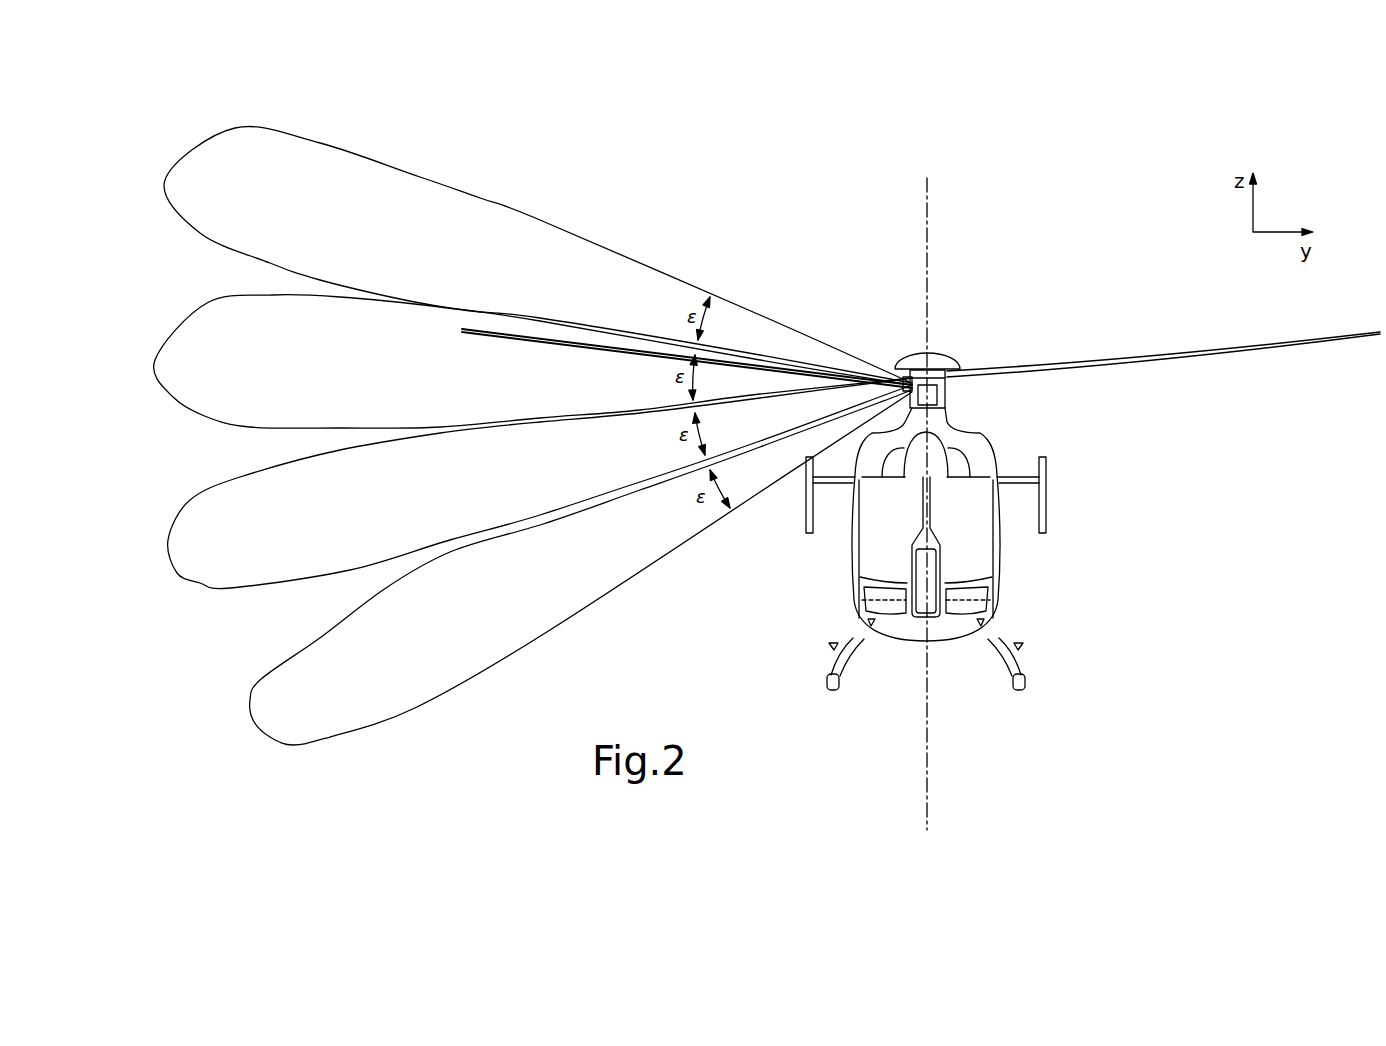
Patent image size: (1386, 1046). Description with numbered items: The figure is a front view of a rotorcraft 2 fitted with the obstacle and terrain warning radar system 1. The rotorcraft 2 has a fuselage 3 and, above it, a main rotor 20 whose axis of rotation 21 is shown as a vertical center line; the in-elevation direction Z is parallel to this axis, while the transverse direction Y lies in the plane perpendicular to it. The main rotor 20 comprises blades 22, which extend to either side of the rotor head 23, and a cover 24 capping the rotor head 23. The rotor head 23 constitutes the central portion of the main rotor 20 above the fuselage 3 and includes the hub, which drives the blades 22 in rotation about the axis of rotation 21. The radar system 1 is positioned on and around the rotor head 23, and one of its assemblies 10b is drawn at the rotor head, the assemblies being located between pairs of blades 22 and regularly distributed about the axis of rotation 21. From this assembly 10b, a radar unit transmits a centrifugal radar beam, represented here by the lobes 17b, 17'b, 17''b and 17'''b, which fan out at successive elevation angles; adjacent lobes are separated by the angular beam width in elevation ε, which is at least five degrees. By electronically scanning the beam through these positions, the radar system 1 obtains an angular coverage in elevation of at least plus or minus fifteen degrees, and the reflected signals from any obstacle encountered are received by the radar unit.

The obstacle and terrain warning radar system 1 is at (886, 250).
The rotorcraft 2 is at (1074, 660).
The fuselage 3 is at (1007, 563).
The assembly 10b is at (903, 368).
The radar beam 17b is at (210, 237).
The radar beam 17'b is at (516, 373).
The radar beam 17''b is at (526, 499).
The radar beam 17'''b is at (581, 602).
The main rotor 20 is at (945, 328).
The axis of rotation 21 is at (927, 228).
The blade 22 is at (1193, 352).
The rotor head 23 is at (948, 394).
The cover 24 is at (953, 357).